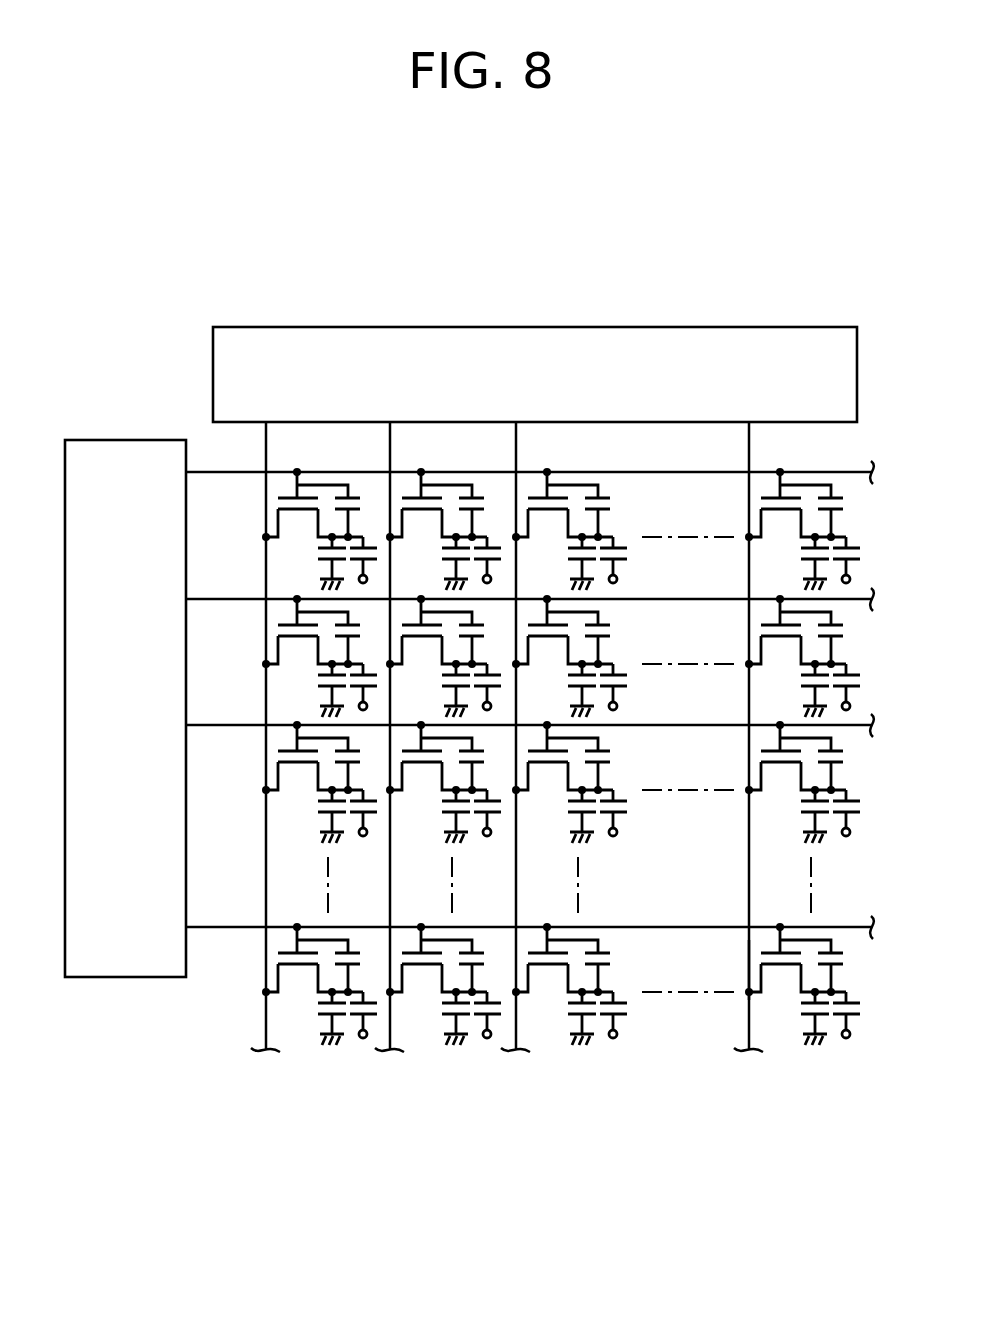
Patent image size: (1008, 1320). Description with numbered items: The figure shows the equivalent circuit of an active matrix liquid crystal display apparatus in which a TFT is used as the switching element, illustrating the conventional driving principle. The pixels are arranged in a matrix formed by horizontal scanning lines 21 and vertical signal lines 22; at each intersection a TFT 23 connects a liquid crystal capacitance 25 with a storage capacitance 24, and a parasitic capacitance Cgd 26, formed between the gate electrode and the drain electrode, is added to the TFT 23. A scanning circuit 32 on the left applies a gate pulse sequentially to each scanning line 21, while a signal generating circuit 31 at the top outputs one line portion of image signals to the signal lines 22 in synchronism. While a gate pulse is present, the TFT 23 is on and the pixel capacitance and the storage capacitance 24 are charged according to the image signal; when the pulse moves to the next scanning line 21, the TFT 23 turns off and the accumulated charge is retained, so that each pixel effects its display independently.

The scanning line 21 is at (218, 472).
The signal line 22 is at (751, 450).
The TFT 23 is at (738, 964).
The storage capacitance 24 is at (556, 1016).
The liquid crystal capacitance 25 is at (639, 1016).
The parasitic capacitance Cgd 26 is at (853, 964).
The signal generating circuit 31 is at (663, 344).
The scanning circuit 32 is at (113, 952).